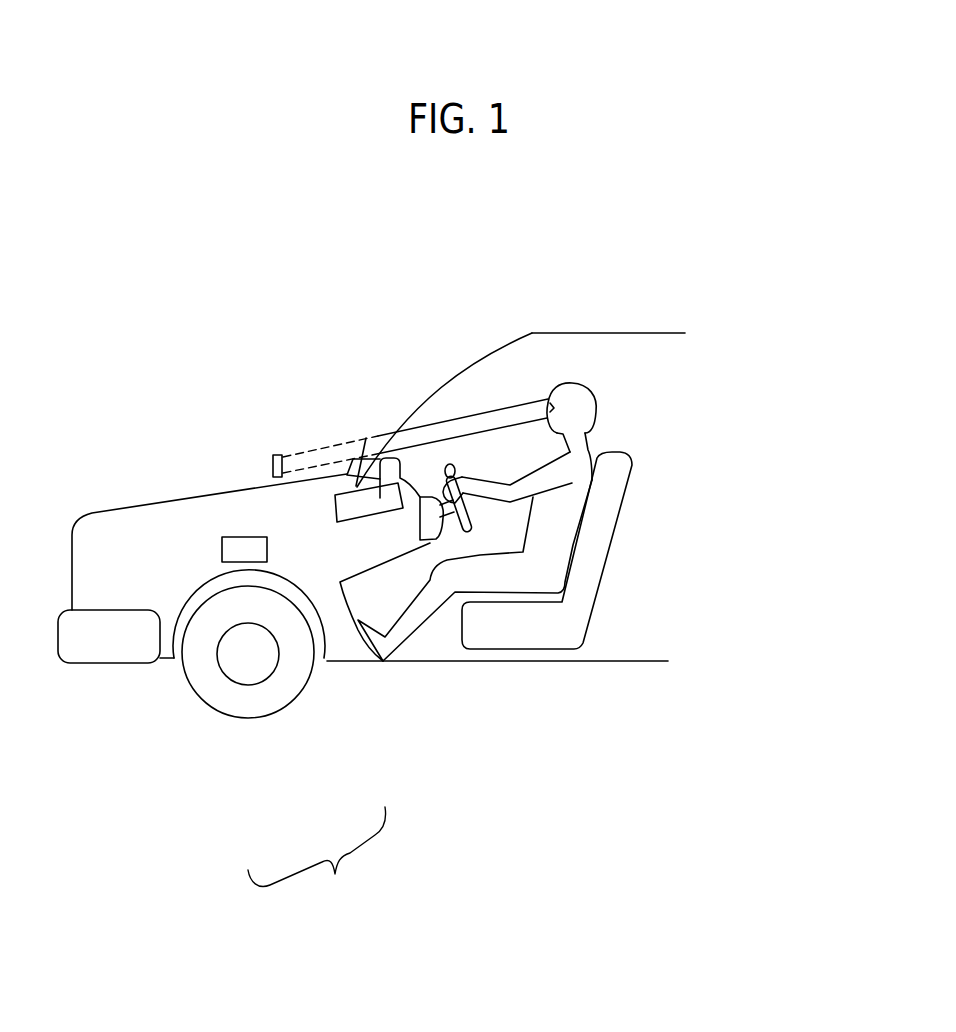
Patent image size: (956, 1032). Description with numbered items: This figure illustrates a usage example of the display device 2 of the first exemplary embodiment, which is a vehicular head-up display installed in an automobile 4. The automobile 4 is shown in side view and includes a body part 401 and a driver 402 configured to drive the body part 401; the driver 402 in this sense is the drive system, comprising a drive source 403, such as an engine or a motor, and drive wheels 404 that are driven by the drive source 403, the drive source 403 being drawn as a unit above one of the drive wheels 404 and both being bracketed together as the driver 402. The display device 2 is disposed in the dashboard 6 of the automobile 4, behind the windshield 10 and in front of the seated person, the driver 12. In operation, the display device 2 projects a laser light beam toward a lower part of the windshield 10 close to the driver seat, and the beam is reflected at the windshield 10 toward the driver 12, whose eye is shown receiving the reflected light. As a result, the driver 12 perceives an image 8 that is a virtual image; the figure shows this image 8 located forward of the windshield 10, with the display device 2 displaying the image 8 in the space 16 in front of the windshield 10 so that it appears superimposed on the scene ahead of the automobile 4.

The display device 2 is at (353, 510).
The automobile 4 is at (638, 333).
The dashboard 6 is at (393, 470).
The image 8 is at (275, 454).
The windshield 10 is at (497, 351).
The driver 12 is at (578, 405).
The space 16 is at (333, 374).
The body part 401 is at (547, 657).
The driver 402 is at (317, 869).
The drive source 403 is at (247, 562).
The drive wheels 404 is at (278, 713).